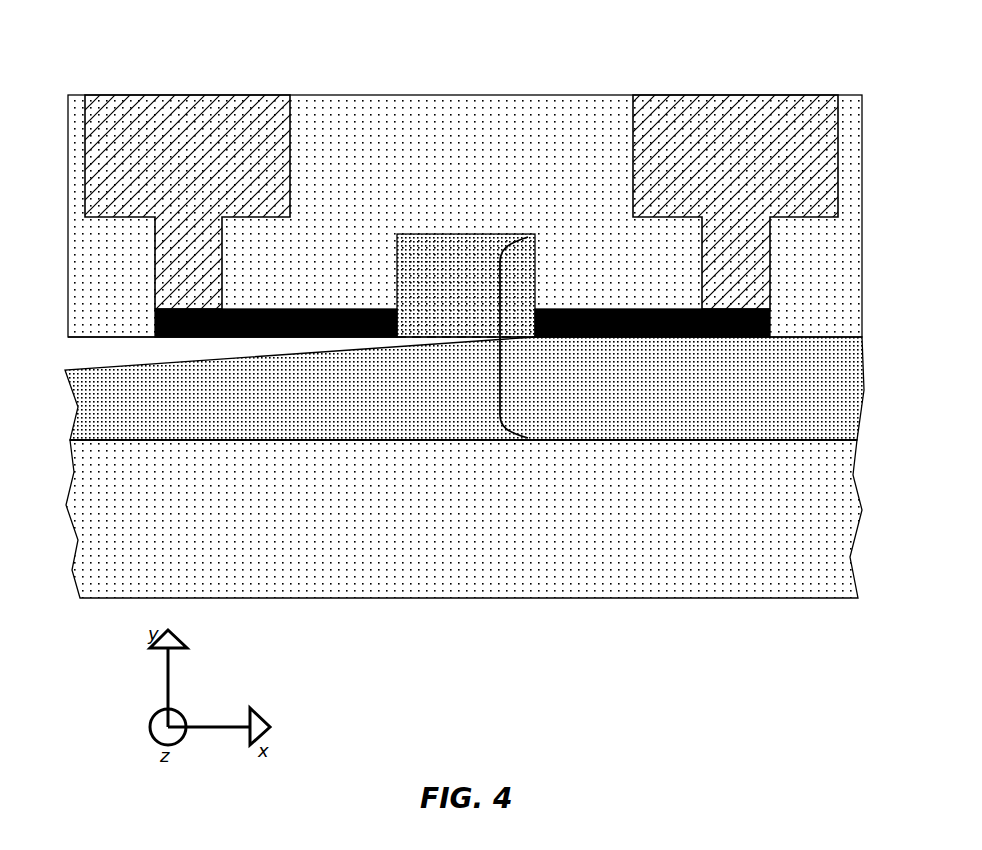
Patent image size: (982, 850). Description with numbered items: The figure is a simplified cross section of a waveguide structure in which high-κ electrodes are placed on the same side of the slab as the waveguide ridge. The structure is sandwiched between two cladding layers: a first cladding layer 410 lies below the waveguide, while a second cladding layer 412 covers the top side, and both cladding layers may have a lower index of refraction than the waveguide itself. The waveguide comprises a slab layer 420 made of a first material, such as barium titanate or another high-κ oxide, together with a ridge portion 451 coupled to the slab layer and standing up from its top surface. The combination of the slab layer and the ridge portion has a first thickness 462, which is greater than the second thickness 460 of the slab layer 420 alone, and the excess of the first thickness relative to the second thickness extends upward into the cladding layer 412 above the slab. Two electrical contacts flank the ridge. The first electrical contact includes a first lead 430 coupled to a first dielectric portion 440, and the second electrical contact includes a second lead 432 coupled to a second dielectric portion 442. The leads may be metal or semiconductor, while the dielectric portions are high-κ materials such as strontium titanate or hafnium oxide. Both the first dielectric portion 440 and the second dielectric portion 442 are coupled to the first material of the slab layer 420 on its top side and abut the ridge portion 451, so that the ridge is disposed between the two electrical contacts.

The first cladding layer 410 is at (757, 560).
The second cladding layer 412 is at (356, 163).
The slab layer 420 is at (866, 388).
The first lead 430 is at (171, 95).
The second lead 432 is at (718, 95).
The first dielectric portion 440 is at (272, 308).
The second dielectric portion 442 is at (567, 308).
The ridge portion 451 is at (431, 234).
The second thickness 460 is at (67, 439).
The first thickness 462 is at (500, 288).